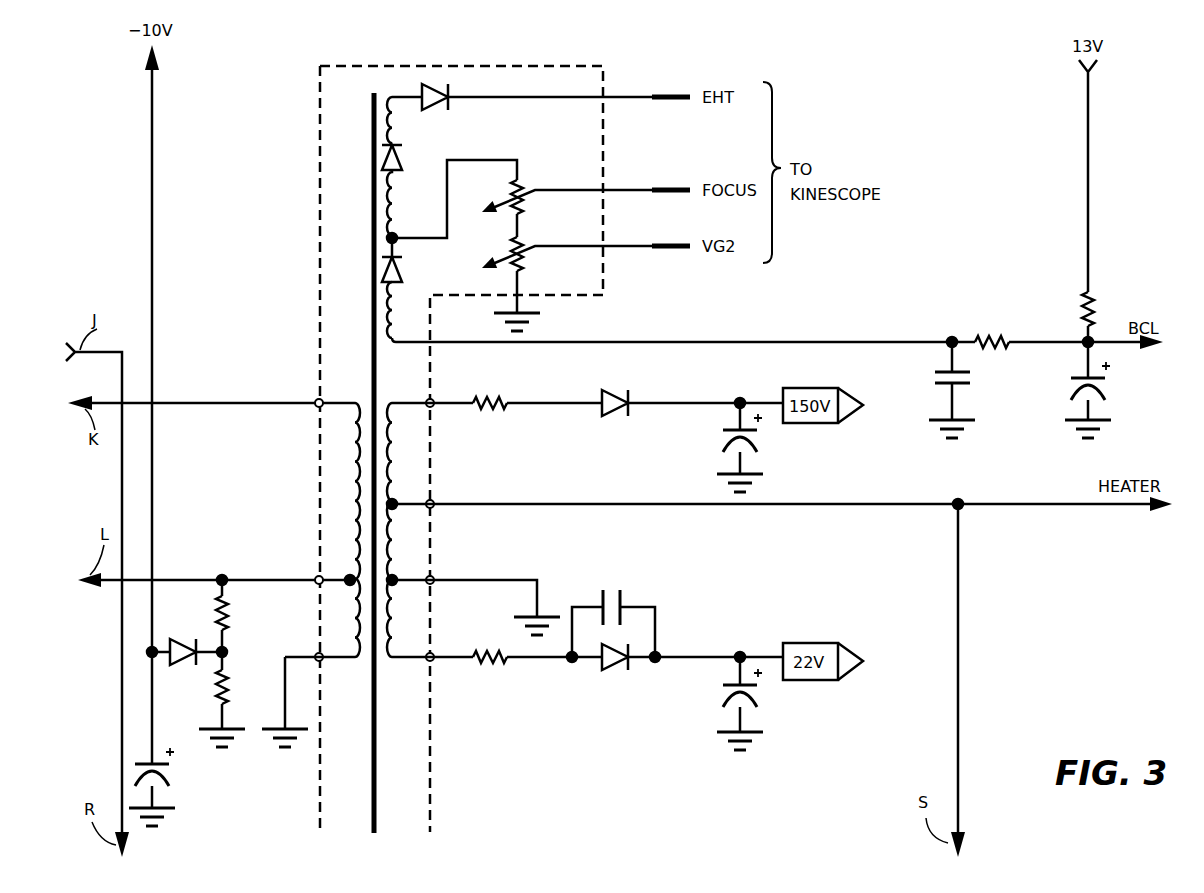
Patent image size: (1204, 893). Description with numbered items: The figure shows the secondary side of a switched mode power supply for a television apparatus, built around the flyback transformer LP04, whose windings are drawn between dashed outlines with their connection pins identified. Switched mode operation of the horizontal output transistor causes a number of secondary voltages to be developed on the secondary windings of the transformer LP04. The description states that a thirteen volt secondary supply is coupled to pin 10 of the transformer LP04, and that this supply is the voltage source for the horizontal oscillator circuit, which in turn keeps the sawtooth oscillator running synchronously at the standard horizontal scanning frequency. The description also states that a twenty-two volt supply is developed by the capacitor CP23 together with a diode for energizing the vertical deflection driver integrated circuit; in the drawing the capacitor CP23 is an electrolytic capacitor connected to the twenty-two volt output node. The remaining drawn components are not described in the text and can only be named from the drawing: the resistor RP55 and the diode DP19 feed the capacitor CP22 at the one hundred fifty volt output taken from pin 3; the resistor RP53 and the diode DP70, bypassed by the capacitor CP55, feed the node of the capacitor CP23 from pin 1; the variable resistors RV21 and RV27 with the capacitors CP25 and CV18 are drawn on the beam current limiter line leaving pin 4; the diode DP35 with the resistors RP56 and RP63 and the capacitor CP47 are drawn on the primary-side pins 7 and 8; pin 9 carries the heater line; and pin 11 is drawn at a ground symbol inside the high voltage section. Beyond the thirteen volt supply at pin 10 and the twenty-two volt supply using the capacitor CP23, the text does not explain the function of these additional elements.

The transformer LP04 is at (461, 451).
The resistor 0.22 ohm RP55 is at (490, 430).
The diode BA157 DP19 is at (616, 431).
The capacitor 22uF 200V CP22 is at (715, 447).
The resistor 0.39 ohm RP53 is at (490, 684).
The diode BA157 DP70 is at (616, 685).
The capacitor 1n 1KV CP55 is at (613, 601).
The capacitor CP23 is at (710, 703).
The resistor 10K 1/2W RV21 is at (990, 306).
The resistor 22K RV27 is at (1062, 307).
The capacitor 10n 250V CP25 is at (934, 390).
The capacitor 100uF 25V CV18 is at (1064, 399).
The diode 1N DP35 is at (187, 631).
The resistor 15K RP56 is at (247, 616).
The resistor 3.3K RP63 is at (238, 699).
The capacitor 1uF CP47 is at (174, 787).
The pin of transformer 10 is at (308, 394).
The transformer pin 7 is at (310, 571).
The transformer pin 8 is at (373, 610).
The transformer pin 3 is at (438, 394).
The transformer pin 9 is at (438, 495).
The transformer pin 1 is at (438, 648).
The transformer pin 4 is at (445, 326).
The transformer pin 11 ground 11 is at (530, 318).